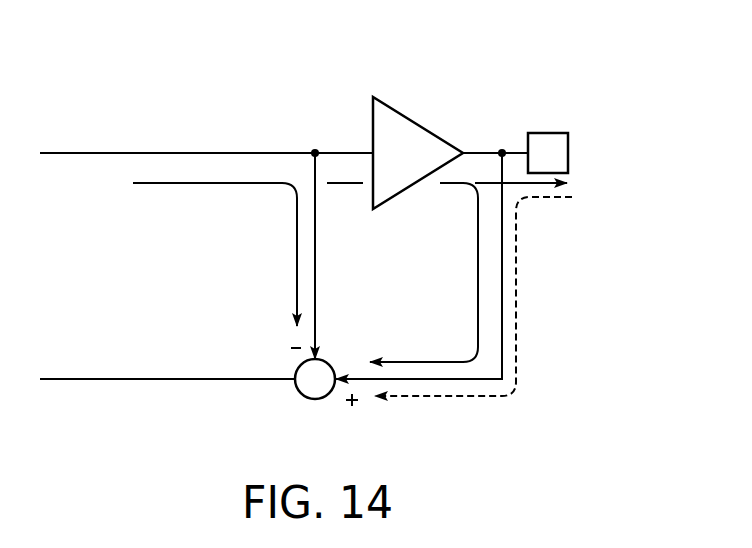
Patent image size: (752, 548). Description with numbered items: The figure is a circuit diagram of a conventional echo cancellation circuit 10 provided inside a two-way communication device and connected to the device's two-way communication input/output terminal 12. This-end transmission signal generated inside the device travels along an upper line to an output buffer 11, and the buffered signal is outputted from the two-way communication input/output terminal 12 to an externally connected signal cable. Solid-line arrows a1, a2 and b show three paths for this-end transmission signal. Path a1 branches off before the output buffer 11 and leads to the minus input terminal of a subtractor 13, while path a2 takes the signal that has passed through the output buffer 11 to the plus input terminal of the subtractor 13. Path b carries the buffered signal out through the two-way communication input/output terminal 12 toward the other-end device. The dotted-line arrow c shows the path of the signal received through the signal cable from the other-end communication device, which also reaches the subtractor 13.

The echo cancellation circuit 10 is at (243, 110).
The output buffer 11 is at (417, 123).
The two-way communication input/output terminal 12 is at (545, 133).
The subtractor 13 is at (329, 365).
The this-end signal path a1 is at (297, 262).
The this-end signal path a2 is at (478, 253).
The signal path b is at (522, 185).
The path for received signal c is at (516, 290).